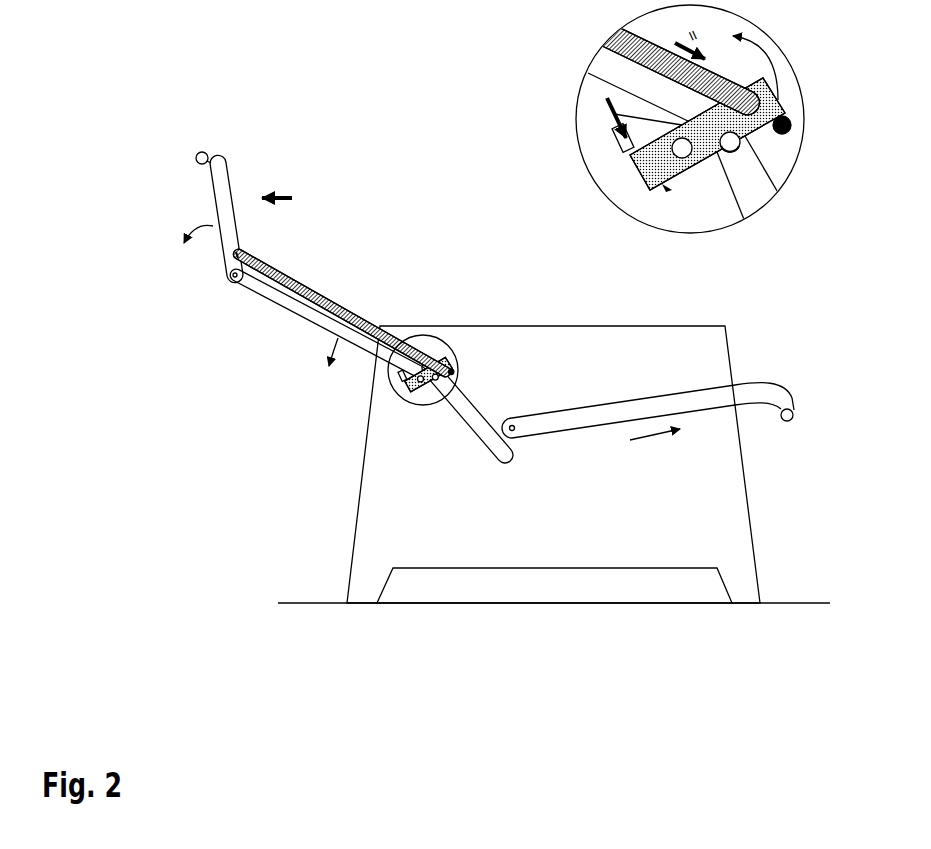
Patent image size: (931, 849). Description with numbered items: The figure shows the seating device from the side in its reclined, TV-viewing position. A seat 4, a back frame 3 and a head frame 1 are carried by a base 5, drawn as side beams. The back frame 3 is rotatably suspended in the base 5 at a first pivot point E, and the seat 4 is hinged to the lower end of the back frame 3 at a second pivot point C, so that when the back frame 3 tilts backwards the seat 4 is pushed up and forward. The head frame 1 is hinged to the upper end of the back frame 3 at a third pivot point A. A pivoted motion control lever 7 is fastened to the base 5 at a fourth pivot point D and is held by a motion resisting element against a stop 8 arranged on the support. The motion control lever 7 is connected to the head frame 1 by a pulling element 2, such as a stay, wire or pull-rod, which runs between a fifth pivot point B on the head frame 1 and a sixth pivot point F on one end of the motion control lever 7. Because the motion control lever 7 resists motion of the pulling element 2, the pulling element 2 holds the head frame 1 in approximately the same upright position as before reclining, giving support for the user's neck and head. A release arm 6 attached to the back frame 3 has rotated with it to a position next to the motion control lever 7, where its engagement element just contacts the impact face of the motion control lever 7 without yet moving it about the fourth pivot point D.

The head frame 1 is at (227, 198).
The pulling element 2 is at (260, 265).
The back frame 3 is at (330, 320).
The seat 4 is at (553, 426).
The base 5 is at (553, 464).
The release arm 6 is at (617, 136).
The motion control lever 7 is at (650, 176).
The stop 8 is at (782, 134).
The third pivot point A is at (231, 275).
The fifth pivot point B is at (239, 255).
The second pivot point C is at (502, 428).
The fourth pivot point D is at (682, 158).
The first pivot point E is at (730, 152).
The sixth pivot point F is at (745, 140).